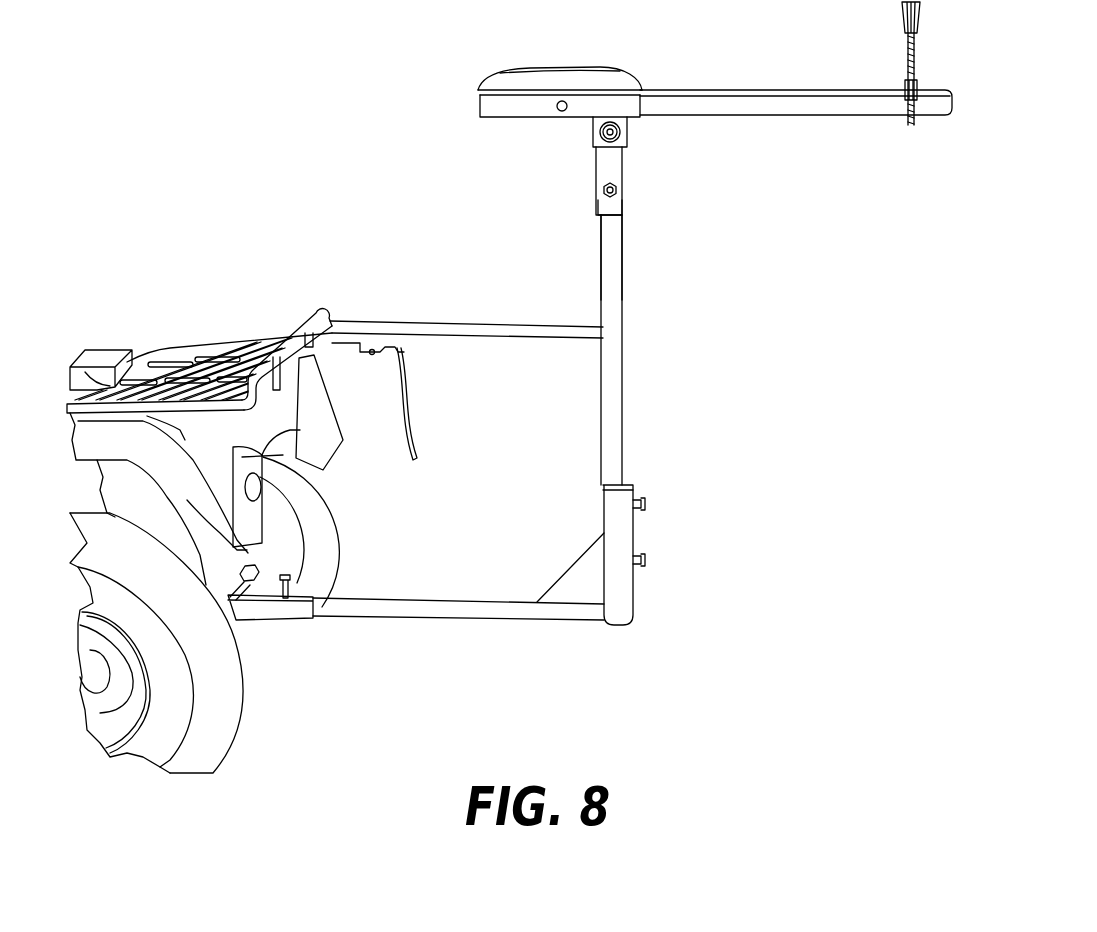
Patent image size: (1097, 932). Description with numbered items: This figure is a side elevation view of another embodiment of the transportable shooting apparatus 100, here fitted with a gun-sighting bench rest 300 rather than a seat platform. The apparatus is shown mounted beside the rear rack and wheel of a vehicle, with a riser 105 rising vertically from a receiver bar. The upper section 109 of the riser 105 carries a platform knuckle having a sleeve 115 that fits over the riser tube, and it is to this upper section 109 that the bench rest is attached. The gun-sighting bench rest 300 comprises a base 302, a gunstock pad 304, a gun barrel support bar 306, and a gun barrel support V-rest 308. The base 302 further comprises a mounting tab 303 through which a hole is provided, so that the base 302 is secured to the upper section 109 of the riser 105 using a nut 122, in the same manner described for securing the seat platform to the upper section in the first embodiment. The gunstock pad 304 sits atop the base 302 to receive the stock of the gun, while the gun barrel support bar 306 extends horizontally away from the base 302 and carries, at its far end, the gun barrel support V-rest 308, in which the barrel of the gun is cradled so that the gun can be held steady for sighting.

The transportable shooting apparatus 100 is at (513, 371).
The riser 105 is at (598, 378).
The upper section 109 is at (596, 222).
The sleeve 115 is at (623, 207).
The nut 122 is at (620, 148).
The gun-sighting bench rest 300 is at (684, 108).
The base 302 is at (538, 112).
The mounting tab 303 is at (625, 140).
The gunstock pad 304 is at (508, 82).
The gun barrel support bar 306 is at (827, 108).
The gun barrel support V-rest 308 is at (902, 18).